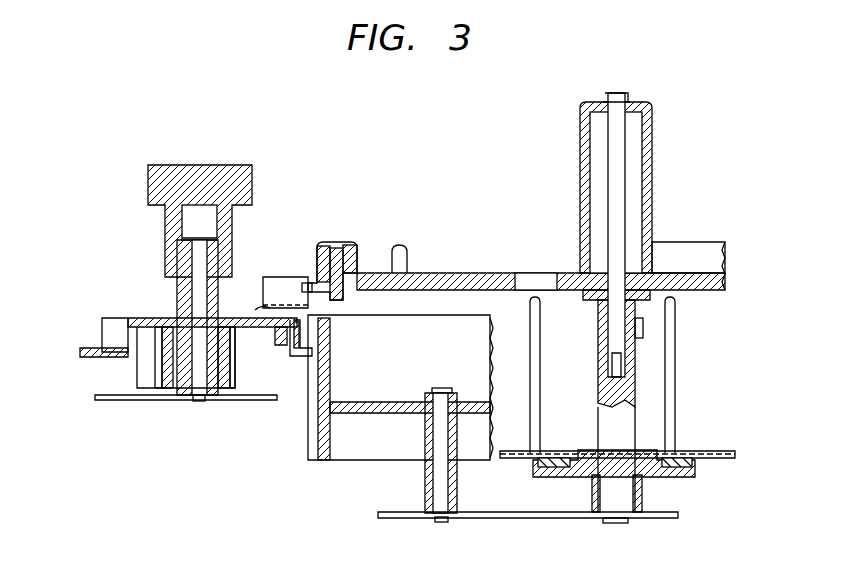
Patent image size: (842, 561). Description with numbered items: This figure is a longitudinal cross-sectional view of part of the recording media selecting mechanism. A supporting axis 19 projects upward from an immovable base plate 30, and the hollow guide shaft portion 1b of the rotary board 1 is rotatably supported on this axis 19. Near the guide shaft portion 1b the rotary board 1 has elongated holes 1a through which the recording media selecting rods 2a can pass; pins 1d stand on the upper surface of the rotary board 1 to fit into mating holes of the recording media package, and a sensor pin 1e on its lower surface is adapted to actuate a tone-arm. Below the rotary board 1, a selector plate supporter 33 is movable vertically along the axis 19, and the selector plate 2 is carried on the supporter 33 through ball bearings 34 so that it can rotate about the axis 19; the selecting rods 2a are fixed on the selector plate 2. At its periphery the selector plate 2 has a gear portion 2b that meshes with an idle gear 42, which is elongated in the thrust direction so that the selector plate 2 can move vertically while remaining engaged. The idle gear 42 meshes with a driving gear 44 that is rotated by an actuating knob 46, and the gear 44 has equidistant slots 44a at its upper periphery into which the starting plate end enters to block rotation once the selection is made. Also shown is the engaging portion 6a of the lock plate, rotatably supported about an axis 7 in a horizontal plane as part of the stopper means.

The rotary board 1 is at (692, 288).
The elongated holes 1a is at (523, 277).
The hollow guide shaft portion 1b is at (653, 150).
The pins 1d is at (409, 257).
The sensor pin 1e is at (345, 294).
The selector plate 2 is at (696, 451).
The recording media selecting rods 2a is at (540, 340).
The gear portion 2b is at (727, 452).
The engaging portion 6a is at (283, 280).
The axis 7 is at (280, 338).
The supporting axis 19 is at (622, 122).
The immovable base plate 30 is at (489, 512).
The selector plate supporter 33 is at (697, 468).
The ball bearings 34 is at (552, 478).
The idle gear 42 is at (312, 440).
The driving gear 44 is at (88, 357).
The slots 44a is at (117, 325).
The actuating knob 46 is at (175, 170).